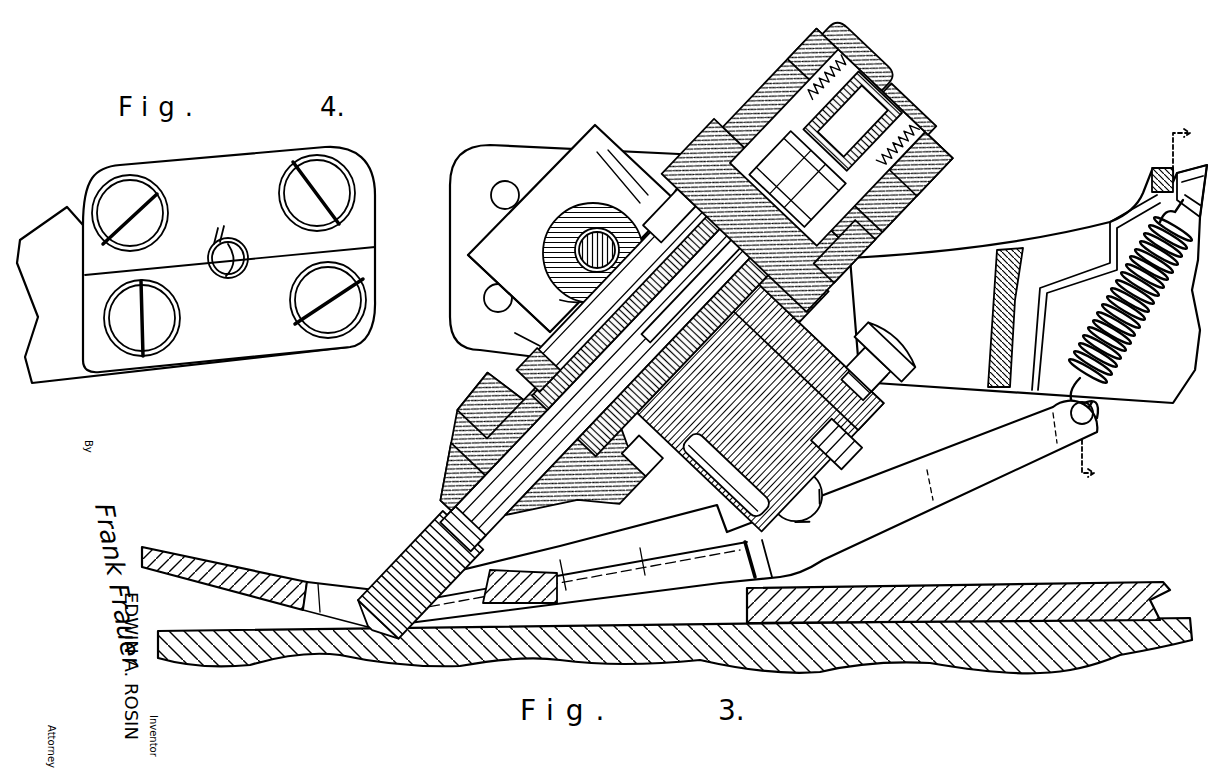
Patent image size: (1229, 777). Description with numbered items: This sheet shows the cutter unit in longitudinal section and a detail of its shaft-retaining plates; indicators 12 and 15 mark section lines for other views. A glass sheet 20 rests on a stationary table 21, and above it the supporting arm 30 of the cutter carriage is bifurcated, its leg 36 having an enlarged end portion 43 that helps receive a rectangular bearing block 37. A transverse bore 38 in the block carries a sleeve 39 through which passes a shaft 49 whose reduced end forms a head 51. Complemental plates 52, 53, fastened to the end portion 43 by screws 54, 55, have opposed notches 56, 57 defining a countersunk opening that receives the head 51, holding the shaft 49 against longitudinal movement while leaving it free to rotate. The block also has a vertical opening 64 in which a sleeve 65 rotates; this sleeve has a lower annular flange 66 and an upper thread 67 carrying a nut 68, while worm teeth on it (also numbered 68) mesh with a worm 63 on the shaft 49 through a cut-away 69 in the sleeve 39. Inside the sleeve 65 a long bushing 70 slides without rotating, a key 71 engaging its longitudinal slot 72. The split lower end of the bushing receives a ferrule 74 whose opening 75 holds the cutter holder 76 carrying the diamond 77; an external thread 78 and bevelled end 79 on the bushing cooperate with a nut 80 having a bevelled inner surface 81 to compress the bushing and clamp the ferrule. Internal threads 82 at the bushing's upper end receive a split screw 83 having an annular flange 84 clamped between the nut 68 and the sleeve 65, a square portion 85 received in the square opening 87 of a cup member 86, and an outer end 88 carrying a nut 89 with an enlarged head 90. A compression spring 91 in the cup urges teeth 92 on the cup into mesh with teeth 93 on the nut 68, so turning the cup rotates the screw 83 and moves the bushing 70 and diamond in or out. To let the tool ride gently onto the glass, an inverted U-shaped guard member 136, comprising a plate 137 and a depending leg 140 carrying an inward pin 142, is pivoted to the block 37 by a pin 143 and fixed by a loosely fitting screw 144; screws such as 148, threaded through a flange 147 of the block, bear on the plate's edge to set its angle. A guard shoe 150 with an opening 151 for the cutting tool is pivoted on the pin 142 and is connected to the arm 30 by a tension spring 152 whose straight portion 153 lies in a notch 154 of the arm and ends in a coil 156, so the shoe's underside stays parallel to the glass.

In FIG. 3, the valve assembly 12 is at (477, 143).
In FIG. 3, the section line 15 is at (1131, 302).
In FIG. 3, the glass sheet 20 is at (1058, 590).
In FIG. 3, the stationary table 21 is at (925, 650).
In FIG. 3, the supporting arm 30 is at (1075, 242).
In FIG. 4, the leg 36 is at (62, 230).
In FIG. 3, the leg 36 is at (968, 270).
In FIG. 3, the bearing block 37 is at (622, 165).
In FIG. 3, the transverse bore 38 is at (545, 215).
In FIG. 3, the sleeve 39 is at (547, 250).
In FIG. 3, the enlarged end portion 43 is at (504, 158).
In FIG. 3, the shaft 49 is at (598, 228).
In FIG. 4, the head 51 is at (235, 252).
In FIG. 4, the complemental plate 52 is at (270, 165).
In FIG. 4, the complemental plate 53 is at (170, 360).
In FIG. 4, the screw 54 is at (140, 180).
In FIG. 3, the screw 54 is at (494, 198).
In FIG. 4, the screw 55 is at (335, 335).
In FIG. 3, the screw 55 is at (486, 300).
In FIG. 4, the semi-circular notch 56 is at (212, 244).
In FIG. 4, the semi-circular notch 57 is at (226, 278).
In FIG. 3, the worm 63 is at (590, 215).
In FIG. 3, the vertical opening 64 is at (770, 350).
In FIG. 3, the sleeve 65 is at (620, 398).
In FIG. 3, the annular flange 66 is at (516, 333).
In FIG. 3, the screw thread 67 is at (695, 160).
In FIG. 3, the nut 68 is at (820, 294).
In FIG. 3, the cut-away portion 69 is at (565, 292).
In FIG. 3, the bushing 70 is at (666, 218).
In FIG. 3, the key 71 is at (655, 448).
In FIG. 3, the longitudinal slot 72 is at (628, 445).
In FIG. 3, the ferrule 74 is at (546, 388).
In FIG. 3, the opening 75 is at (445, 520).
In FIG. 3, the cutter holder 76 is at (405, 560).
In FIG. 3, the diamond 77 is at (370, 632).
In FIG. 3, the external thread 78 is at (480, 383).
In FIG. 3, the bevelled end 79 is at (488, 478).
In FIG. 3, the nut 80 is at (455, 412).
In FIG. 3, the bevelled inner surface 81 is at (440, 478).
In FIG. 3, the internal thread 82 is at (652, 345).
In FIG. 3, the split screw 83 is at (815, 312).
In FIG. 3, the annular flange 84 is at (718, 135).
In FIG. 3, the square portion 85 is at (765, 105).
In FIG. 3, the cup member 86 is at (803, 60).
In FIG. 3, the square opening 87 is at (885, 233).
In FIG. 3, the outer end 88 is at (895, 108).
In FIG. 3, the nut 89 is at (872, 70).
In FIG. 3, the annular head 90 is at (935, 128).
In FIG. 3, the compression spring 91 is at (918, 190).
In FIG. 3, the teeth 92 is at (860, 258).
In FIG. 3, the teeth 93 is at (748, 120).
In FIG. 3, the guard member 136 is at (647, 535).
In FIG. 3, the plate 137 is at (805, 480).
In FIG. 3, the depending leg 140 is at (575, 598).
In FIG. 3, the pin 142 is at (372, 630).
In FIG. 3, the pin 143 is at (740, 505).
In FIG. 3, the screw 144 is at (797, 527).
In FIG. 3, the flange 147 is at (880, 418).
In FIG. 3, the screw 148 is at (900, 358).
In FIG. 3, the guard shoe 150 is at (685, 575).
In FIG. 3, the opening 151 is at (360, 600).
In FIG. 3, the tension spring 152 is at (1135, 305).
In FIG. 3, the straight portion 153 is at (1147, 198).
In FIG. 3, the notch 154 is at (1178, 184).
In FIG. 3, the coil 156 is at (1088, 326).